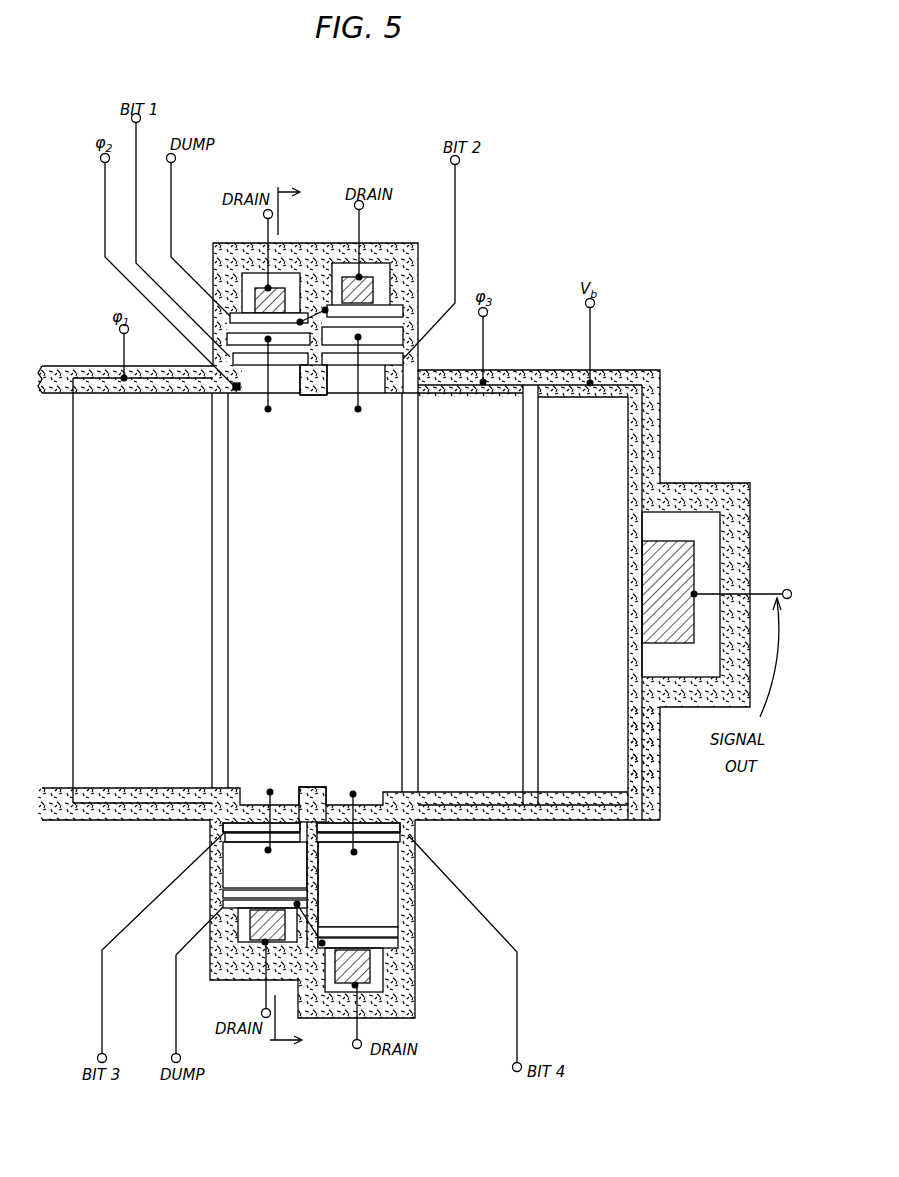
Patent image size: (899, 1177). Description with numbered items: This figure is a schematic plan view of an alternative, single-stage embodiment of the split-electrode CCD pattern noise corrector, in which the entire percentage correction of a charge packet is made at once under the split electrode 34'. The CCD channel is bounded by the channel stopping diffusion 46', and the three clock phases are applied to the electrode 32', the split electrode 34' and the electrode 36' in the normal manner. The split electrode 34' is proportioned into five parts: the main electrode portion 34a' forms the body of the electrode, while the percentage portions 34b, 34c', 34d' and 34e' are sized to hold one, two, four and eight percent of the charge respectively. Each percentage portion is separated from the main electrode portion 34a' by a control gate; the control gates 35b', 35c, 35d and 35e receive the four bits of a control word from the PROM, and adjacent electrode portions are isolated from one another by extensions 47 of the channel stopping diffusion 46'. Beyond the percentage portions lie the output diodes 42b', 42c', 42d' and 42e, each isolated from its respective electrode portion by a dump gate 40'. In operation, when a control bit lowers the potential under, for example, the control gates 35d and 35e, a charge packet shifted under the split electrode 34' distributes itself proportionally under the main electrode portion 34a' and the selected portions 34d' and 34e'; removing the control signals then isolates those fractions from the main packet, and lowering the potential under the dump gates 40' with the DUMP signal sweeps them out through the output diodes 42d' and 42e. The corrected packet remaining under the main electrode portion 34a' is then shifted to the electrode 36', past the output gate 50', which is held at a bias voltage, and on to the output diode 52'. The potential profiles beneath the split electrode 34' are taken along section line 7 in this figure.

The section line 7 is at (296, 615).
The electrode 32' is at (111, 590).
The split electrode 34' is at (125, 516).
The main electrode portion 34a' is at (315, 581).
The 1% electrode portion 34b is at (290, 340).
The 2% electrode portion 34c' is at (362, 374).
The 4% electrode portion 34d' is at (272, 866).
The 8% electrode portion 34e' is at (358, 870).
The control gate 35b' is at (270, 386).
The control gate 35c is at (408, 358).
The control gate 35d is at (215, 826).
The control gate 35e is at (410, 828).
The electrode 36' is at (520, 568).
The dump gate 40' is at (306, 594).
The output diode 42b' is at (255, 265).
The output diode 42c' is at (373, 269).
The output diode 42d' is at (244, 958).
The output diode 42e is at (372, 970).
The channel stopping diffusion 46' is at (59, 356).
The extension of channel stopping diffusion 47 is at (318, 397).
The output gate 50' is at (680, 501).
The output diode 52' is at (675, 582).